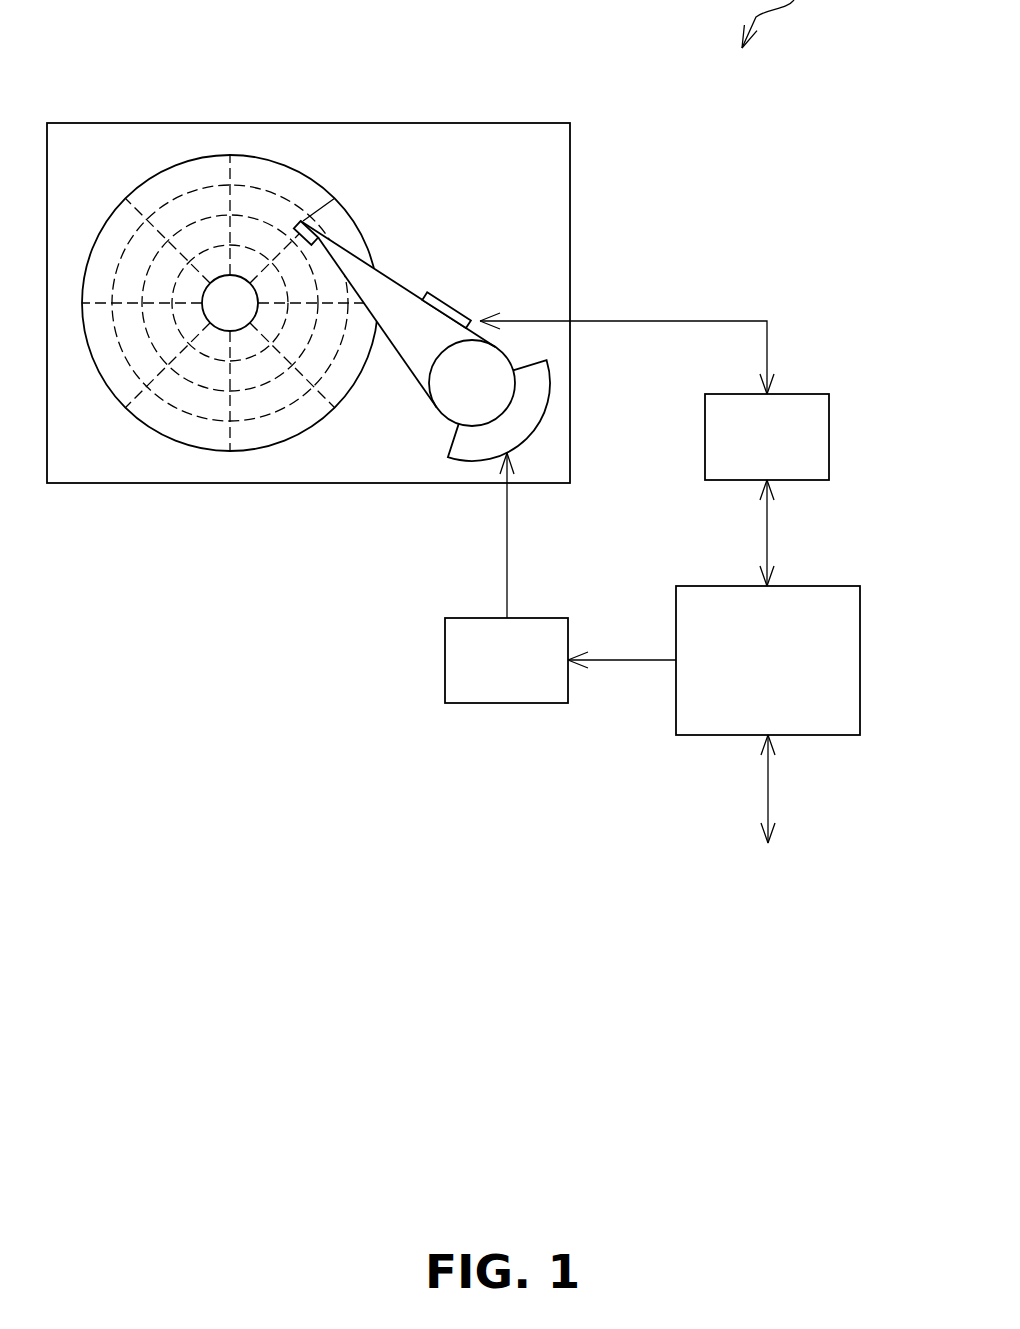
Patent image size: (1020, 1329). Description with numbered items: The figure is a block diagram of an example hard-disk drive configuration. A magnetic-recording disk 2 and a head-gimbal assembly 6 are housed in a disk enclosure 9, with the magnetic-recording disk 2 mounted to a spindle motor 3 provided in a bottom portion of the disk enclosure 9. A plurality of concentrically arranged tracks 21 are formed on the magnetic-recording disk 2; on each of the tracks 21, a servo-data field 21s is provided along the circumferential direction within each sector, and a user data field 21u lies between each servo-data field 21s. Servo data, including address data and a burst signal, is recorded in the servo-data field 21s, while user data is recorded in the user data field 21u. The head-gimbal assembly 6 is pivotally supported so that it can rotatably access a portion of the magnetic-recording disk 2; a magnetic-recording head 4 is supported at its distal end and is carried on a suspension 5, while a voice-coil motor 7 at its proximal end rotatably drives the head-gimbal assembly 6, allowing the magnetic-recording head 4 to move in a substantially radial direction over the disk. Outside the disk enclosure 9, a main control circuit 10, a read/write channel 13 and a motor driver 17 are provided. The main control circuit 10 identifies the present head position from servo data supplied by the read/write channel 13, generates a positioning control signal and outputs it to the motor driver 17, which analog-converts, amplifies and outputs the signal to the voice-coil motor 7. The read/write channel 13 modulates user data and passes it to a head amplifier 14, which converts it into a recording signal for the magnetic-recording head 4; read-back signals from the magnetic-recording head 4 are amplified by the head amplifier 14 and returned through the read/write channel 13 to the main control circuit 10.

The magnetic-recording disk 2 is at (155, 188).
The spindle motor 3 is at (212, 298).
The magnetic-recording head 4 is at (300, 226).
The suspension 5 is at (382, 287).
The head-gimbal assembly 6 is at (415, 367).
The voice-coil motor 7 is at (467, 452).
The disk enclosure 9 is at (479, 123).
The main control circuit 10 is at (803, 585).
The read/write channel 13 is at (803, 393).
The head amplifier 14 is at (443, 300).
The motor driver 17 is at (507, 705).
The tracks 21 is at (122, 357).
The user data field 21u is at (158, 403).
The servo-data field 21s is at (232, 438).